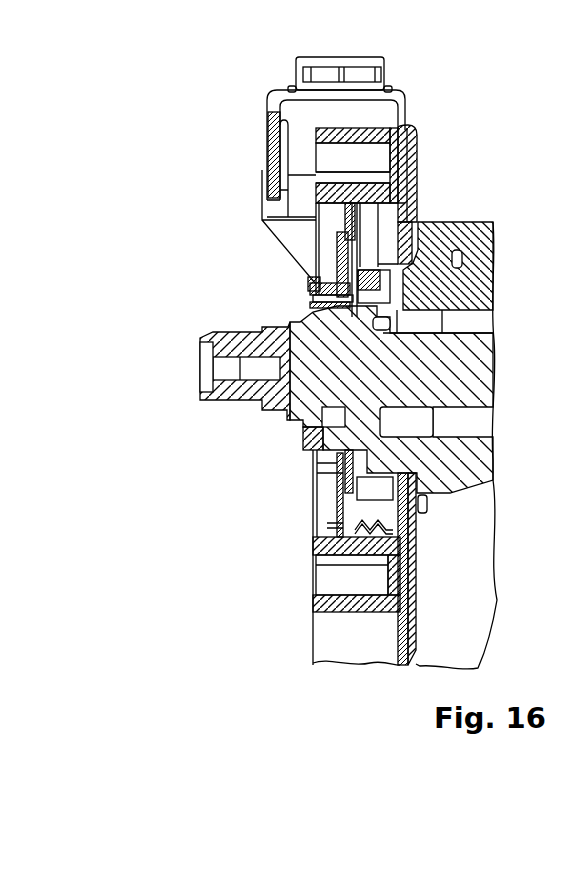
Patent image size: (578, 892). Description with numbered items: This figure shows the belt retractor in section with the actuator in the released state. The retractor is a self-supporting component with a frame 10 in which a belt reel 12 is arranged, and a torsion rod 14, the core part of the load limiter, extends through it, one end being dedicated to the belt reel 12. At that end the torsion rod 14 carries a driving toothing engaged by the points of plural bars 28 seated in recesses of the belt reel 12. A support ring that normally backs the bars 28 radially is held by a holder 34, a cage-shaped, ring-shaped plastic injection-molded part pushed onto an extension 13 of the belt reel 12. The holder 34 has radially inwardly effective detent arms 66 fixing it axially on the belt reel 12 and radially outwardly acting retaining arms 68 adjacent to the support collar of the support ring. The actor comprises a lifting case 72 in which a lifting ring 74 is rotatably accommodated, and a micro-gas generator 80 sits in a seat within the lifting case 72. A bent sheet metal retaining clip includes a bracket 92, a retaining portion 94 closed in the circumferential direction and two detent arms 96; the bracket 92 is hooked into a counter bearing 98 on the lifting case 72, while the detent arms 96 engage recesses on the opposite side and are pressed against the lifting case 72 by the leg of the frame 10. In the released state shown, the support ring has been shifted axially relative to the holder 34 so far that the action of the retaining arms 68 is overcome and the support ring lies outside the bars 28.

The frame 10 is at (413, 168).
The belt reel 12 is at (482, 270).
The extension 13 is at (226, 330).
The torsion rod 14 is at (488, 390).
The bars 28 is at (385, 268).
The holder 34 is at (318, 297).
The detent arms 66 is at (417, 335).
The retaining arms 68 is at (318, 268).
The lifting case 72 is at (292, 582).
The lifting ring 74 is at (318, 222).
The micro-gas generator 80 is at (358, 62).
The bracket 92 is at (268, 193).
The retaining portion 94 is at (290, 90).
The detent arms 96 is at (400, 115).
The counter bearing 98 is at (265, 140).